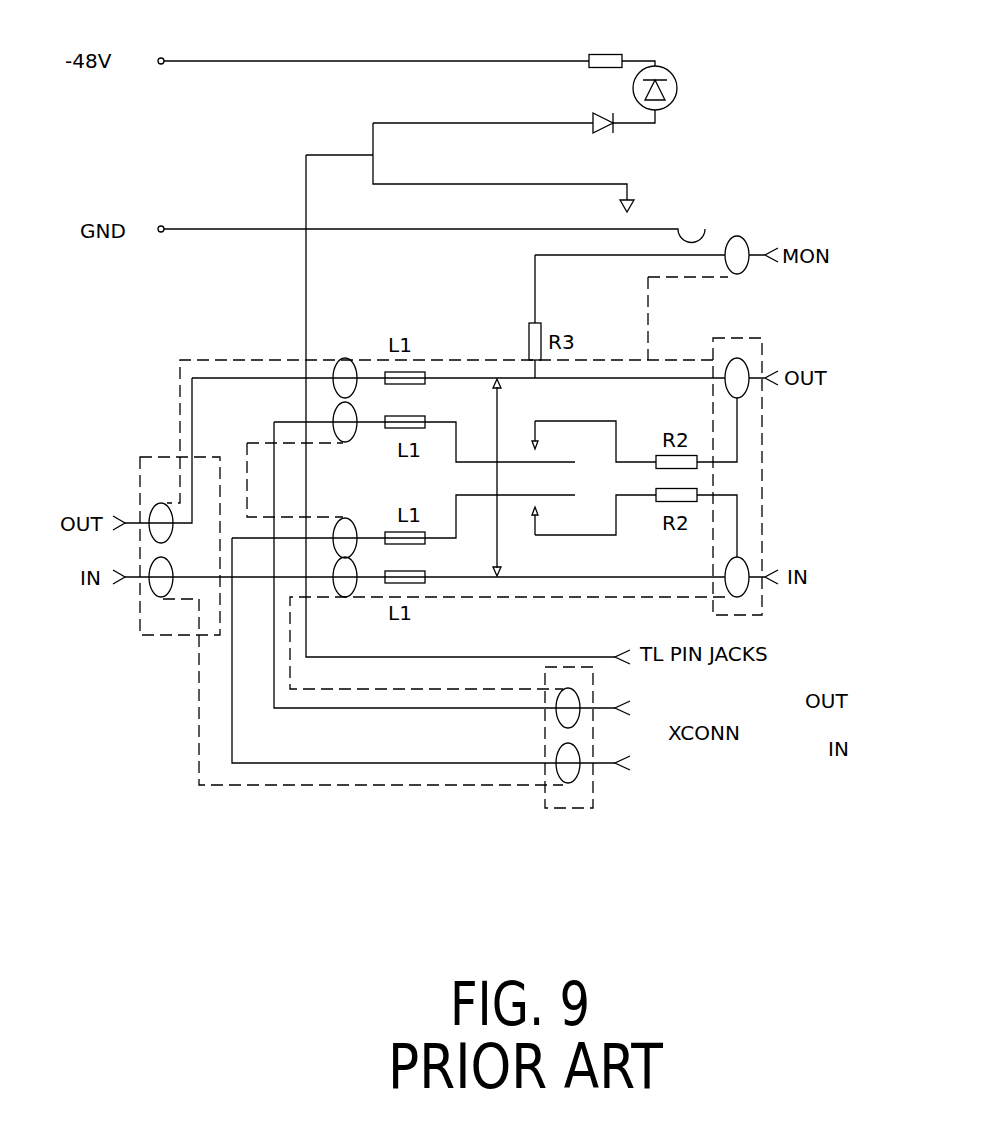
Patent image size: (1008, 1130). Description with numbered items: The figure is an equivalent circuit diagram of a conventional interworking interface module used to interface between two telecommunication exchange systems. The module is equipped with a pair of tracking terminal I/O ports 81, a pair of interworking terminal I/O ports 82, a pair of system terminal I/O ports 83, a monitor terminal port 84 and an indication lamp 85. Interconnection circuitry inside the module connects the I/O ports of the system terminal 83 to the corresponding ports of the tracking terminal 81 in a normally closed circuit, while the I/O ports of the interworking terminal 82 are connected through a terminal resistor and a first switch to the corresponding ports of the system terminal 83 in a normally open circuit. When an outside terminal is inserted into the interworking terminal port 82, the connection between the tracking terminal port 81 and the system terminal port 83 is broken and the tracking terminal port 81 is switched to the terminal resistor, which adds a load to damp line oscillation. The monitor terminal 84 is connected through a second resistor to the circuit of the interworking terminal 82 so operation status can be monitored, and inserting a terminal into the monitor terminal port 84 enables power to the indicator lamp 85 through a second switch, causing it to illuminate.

The tracking terminal I/O ports 81 is at (572, 812).
The terminal I/O ports 82 is at (763, 473).
The system terminal I/O ports 83 is at (165, 637).
The monitor terminal port 84 is at (741, 237).
The indication lamp 85 is at (675, 63).